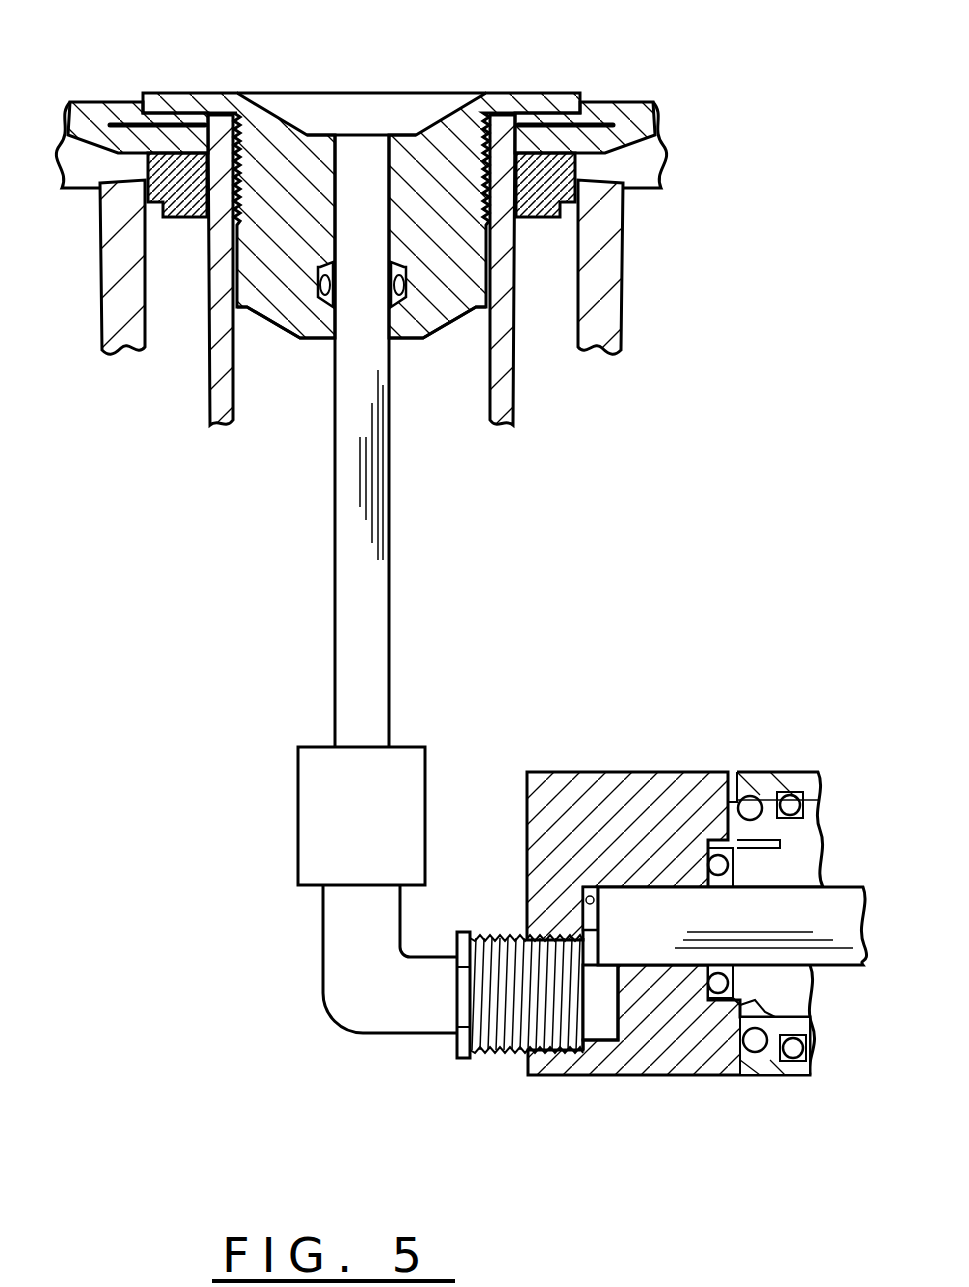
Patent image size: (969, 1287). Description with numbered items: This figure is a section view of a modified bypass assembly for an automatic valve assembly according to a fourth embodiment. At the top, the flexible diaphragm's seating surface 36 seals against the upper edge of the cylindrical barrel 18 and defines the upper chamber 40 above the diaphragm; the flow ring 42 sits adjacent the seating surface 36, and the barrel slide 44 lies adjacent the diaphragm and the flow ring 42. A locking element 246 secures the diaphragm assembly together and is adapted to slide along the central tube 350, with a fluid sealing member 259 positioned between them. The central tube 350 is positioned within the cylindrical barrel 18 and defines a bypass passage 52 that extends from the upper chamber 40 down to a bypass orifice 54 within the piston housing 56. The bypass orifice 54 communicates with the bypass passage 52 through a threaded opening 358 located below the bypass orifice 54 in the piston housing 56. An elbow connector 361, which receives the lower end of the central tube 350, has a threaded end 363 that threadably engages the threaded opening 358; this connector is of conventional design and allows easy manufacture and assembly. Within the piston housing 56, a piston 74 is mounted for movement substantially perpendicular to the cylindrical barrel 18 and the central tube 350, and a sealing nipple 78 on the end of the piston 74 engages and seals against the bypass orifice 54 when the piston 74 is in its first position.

The upper chamber 40 is at (455, 38).
The bypass passage 52 is at (363, 130).
The seating surface 36 is at (660, 170).
The flow ring 42 is at (580, 207).
The cylindrical barrel 18 is at (597, 307).
The barrel slide 44 is at (220, 377).
The fluid sealing member 259 is at (323, 300).
The locking element 246 is at (433, 327).
The central tube 350 is at (388, 560).
The elbow connector 361 is at (392, 840).
The threaded end 363 is at (488, 1055).
The threaded opening 358 is at (573, 1070).
The piston housing 56 is at (577, 770).
The sealing nipple 78 is at (593, 885).
The bypass orifice 54 is at (547, 923).
The piston 74 is at (780, 928).